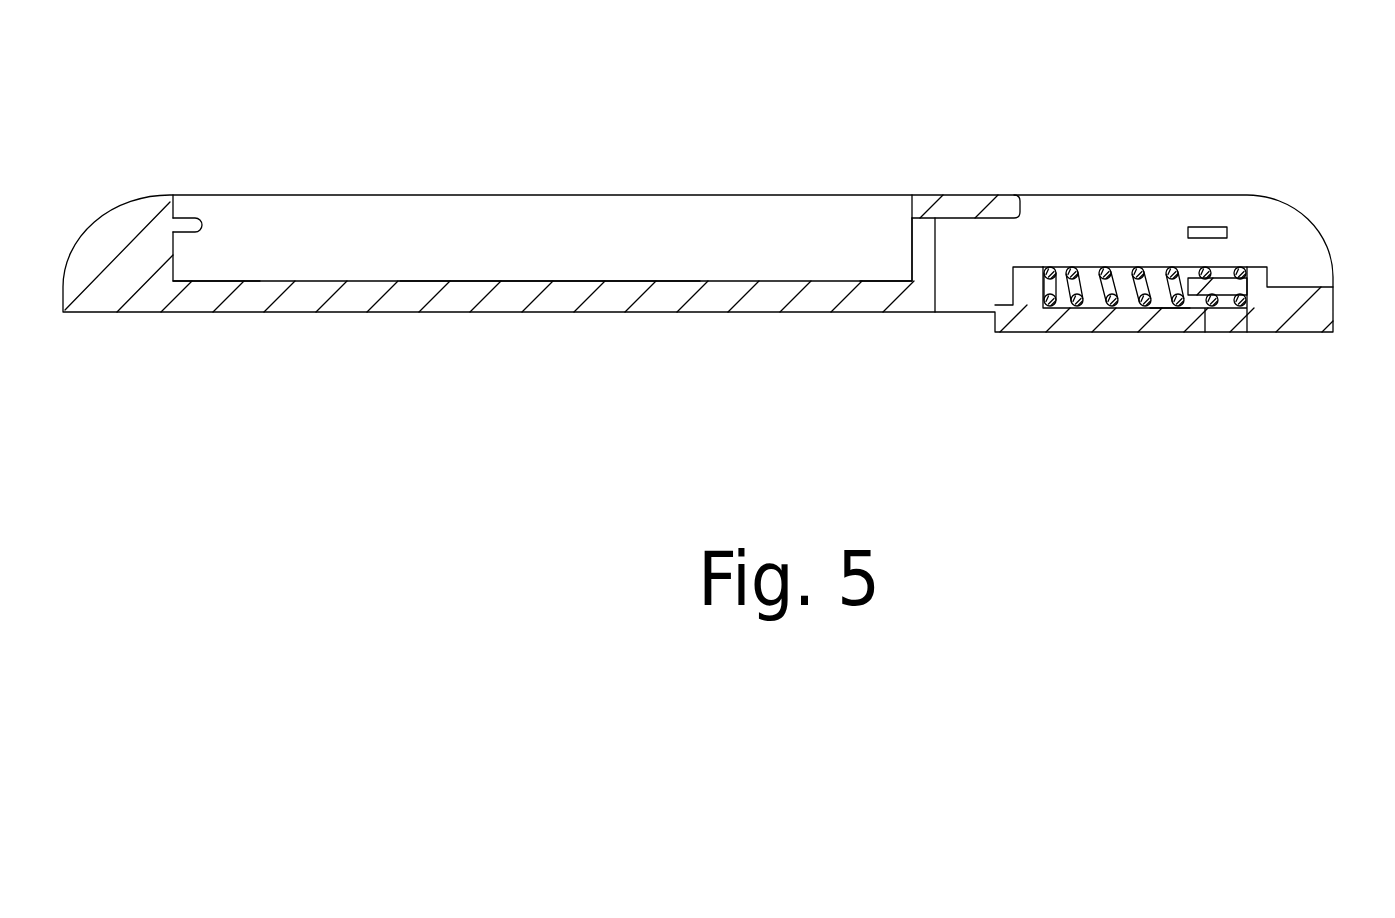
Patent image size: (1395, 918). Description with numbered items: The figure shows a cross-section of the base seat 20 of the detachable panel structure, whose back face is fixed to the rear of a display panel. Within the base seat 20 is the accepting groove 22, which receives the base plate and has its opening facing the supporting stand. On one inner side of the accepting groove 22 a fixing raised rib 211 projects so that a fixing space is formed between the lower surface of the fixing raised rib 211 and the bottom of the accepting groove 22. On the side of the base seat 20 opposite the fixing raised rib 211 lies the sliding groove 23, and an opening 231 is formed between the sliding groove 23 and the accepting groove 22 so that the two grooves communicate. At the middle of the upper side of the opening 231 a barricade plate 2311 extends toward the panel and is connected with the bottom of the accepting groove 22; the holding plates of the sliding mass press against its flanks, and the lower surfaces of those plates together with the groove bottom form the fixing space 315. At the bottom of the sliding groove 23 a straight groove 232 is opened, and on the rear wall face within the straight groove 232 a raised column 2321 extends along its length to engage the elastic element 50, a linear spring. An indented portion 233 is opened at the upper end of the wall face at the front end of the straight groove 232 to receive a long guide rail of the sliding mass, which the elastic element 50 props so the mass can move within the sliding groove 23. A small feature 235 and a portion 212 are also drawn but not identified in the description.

The base seat 20 is at (113, 250).
The fixing raised rib 211 is at (187, 223).
The bottom wall 212 is at (197, 263).
The accepting groove 22 is at (575, 250).
The fixing space 315 is at (897, 262).
The opening 231 is at (922, 247).
The barricade plate 2311 is at (957, 207).
The indented portion 233 is at (1028, 283).
The sliding groove 23 is at (1088, 223).
The elastic element 50 is at (1150, 278).
The slot 235 is at (1208, 232).
The straight groove 232 is at (1160, 290).
The raised column 2321 is at (1223, 283).